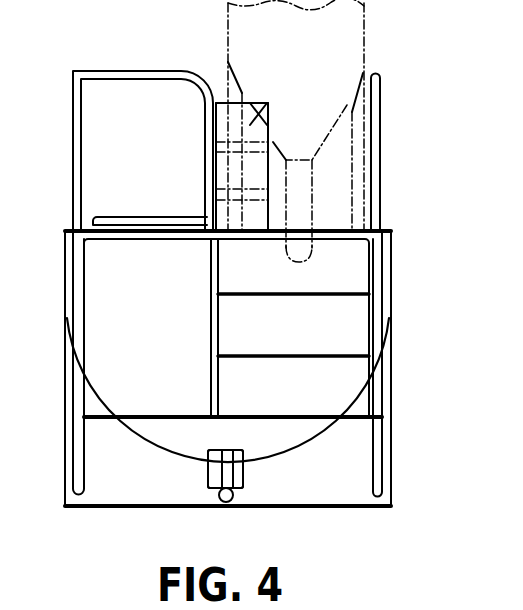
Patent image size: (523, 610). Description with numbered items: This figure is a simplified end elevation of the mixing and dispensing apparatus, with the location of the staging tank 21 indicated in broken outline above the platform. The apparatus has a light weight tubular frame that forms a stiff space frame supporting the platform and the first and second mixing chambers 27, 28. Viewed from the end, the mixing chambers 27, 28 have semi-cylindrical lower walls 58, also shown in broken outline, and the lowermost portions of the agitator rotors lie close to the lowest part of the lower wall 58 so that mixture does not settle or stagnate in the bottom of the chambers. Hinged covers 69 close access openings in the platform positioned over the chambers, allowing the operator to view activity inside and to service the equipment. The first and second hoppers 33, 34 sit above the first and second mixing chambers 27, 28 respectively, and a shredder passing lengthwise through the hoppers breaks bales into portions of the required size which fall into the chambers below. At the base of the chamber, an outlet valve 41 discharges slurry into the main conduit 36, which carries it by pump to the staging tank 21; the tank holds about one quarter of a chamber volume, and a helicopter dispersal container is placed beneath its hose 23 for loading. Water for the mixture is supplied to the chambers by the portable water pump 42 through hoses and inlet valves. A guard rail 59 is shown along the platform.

The staging tank 21 is at (364, 56).
The hose 23 is at (312, 203).
The first mixing chamber 27 is at (348, 273).
The second mixing chamber 28 is at (293, 325).
The first hopper 33 is at (270, 103).
The second hopper 34 is at (242, 167).
The main conduit 36 is at (230, 501).
The outlet valve 41 is at (233, 471).
The portable water pump 42 is at (225, 469).
The semi-cylindrical lower wall 58 is at (160, 443).
The guard rail 59 is at (137, 71).
The hinged cover 69 is at (150, 217).